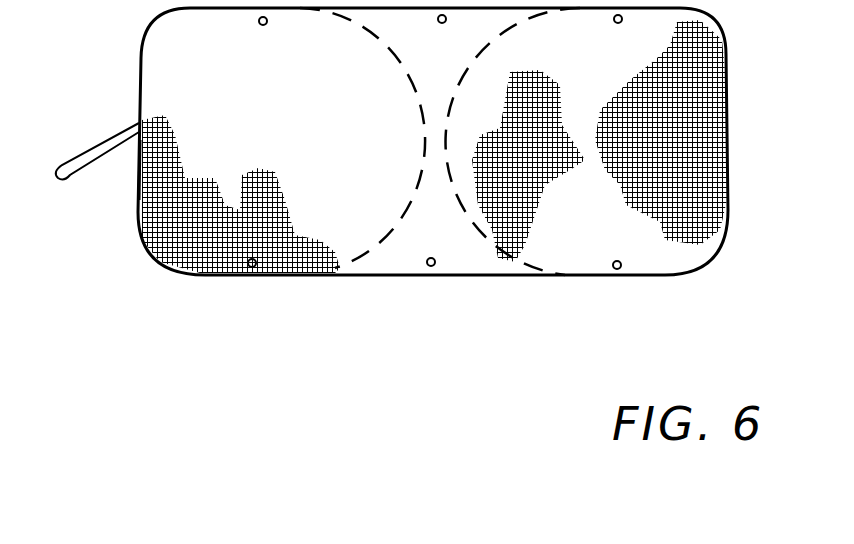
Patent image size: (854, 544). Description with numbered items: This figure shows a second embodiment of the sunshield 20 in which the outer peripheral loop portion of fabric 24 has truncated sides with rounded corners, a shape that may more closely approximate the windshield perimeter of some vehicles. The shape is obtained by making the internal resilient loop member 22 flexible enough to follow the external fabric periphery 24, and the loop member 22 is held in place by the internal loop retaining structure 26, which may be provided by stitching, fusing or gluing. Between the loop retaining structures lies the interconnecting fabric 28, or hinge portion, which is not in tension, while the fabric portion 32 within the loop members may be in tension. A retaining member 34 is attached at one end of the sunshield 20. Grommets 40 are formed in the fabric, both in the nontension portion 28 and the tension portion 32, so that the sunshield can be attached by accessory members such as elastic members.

The sunshield 20 is at (580, 206).
The resilient loop member 22 is at (136, 184).
The peripheral loop portion of fabric 24 is at (151, 270).
The internal loop retaining structure 26 is at (493, 242).
The interconnecting fabric 28 is at (408, 238).
The fabric portion 32 is at (293, 172).
The retaining member 34 is at (58, 178).
The grommet 40 is at (432, 268).